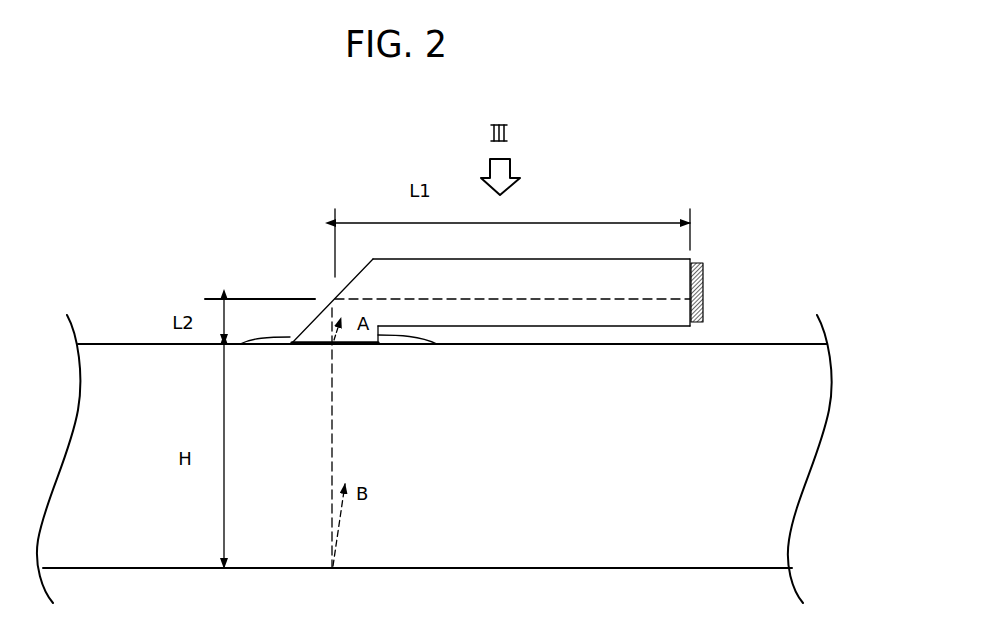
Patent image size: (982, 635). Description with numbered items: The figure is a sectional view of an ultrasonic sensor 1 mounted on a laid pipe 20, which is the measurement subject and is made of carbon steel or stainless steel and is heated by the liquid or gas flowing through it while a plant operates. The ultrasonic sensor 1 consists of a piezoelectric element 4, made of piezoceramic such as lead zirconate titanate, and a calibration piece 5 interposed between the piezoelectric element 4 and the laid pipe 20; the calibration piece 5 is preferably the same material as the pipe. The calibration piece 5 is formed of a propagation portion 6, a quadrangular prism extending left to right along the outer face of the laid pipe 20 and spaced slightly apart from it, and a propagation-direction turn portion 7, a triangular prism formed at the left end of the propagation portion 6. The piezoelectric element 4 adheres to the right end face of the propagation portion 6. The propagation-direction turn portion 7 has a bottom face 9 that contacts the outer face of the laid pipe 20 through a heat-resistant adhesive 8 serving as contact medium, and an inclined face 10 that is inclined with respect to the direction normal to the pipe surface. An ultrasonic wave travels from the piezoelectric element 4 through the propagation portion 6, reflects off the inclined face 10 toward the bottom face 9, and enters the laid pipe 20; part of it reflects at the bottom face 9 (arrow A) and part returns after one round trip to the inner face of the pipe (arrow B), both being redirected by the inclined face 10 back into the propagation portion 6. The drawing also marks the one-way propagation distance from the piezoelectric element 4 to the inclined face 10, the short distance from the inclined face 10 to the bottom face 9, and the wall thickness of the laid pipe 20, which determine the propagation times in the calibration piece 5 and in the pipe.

The ultrasonic sensor 1 is at (518, 300).
The piezoelectric element 4 is at (704, 290).
The calibration piece 5 is at (610, 256).
The propagation portion 6 is at (568, 328).
The propagation-direction turn portion 7 is at (362, 348).
The heat-resistant adhesive 8 is at (405, 348).
The bottom face 9 is at (313, 342).
The inclined face 10 is at (337, 294).
The laid pipe 20 is at (117, 343).